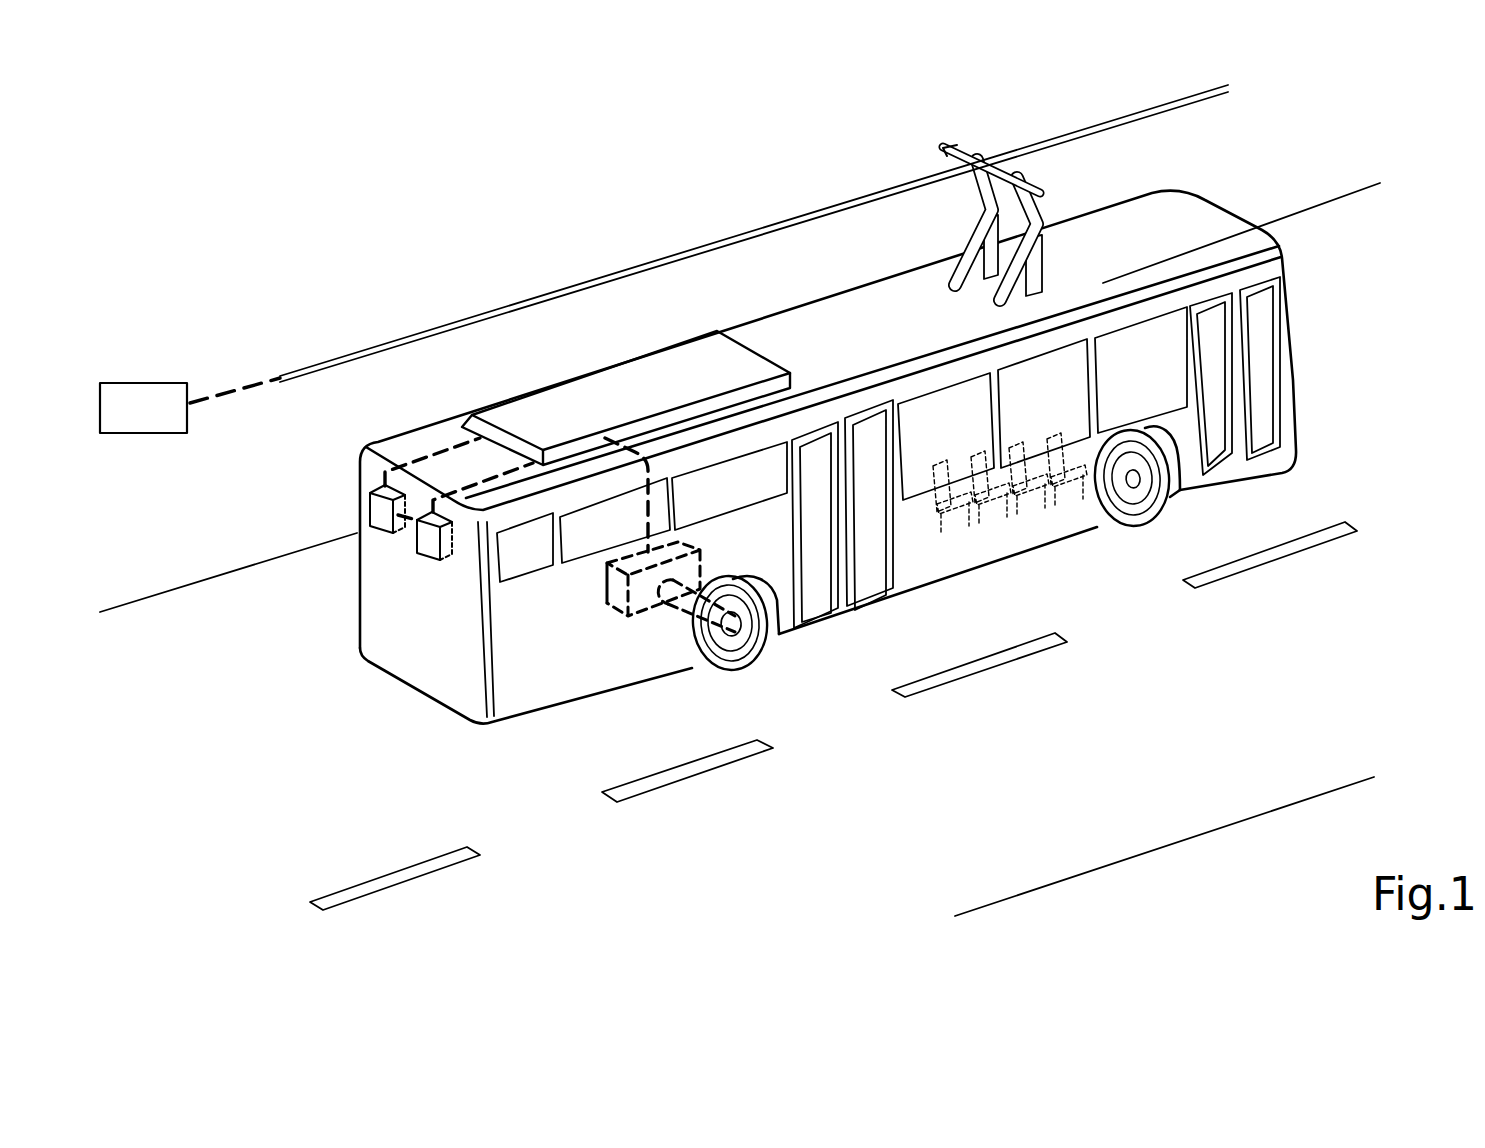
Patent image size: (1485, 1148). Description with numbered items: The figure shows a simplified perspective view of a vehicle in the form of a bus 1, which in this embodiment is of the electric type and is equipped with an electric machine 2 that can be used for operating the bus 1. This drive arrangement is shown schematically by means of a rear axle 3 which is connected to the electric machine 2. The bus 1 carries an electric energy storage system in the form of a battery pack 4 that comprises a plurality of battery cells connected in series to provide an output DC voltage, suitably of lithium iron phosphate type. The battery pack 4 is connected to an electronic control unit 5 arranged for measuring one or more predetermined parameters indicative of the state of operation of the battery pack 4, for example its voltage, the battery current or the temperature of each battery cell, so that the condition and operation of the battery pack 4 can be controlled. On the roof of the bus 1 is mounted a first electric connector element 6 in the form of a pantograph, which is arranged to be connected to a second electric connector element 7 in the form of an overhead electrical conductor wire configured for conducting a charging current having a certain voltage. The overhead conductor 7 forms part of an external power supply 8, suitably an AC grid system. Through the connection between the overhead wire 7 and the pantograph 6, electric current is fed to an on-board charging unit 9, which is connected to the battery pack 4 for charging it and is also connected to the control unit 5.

The bus 1 is at (394, 380).
The electric machine 2 is at (610, 600).
The rear axle 3 is at (678, 600).
The battery pack 4 is at (580, 397).
The electronic control unit 5 is at (377, 507).
The first electric connector element 6 is at (967, 232).
The second electric connector element 7 is at (717, 240).
The external power supply 8 is at (148, 397).
The on-board charging unit 9 is at (417, 545).